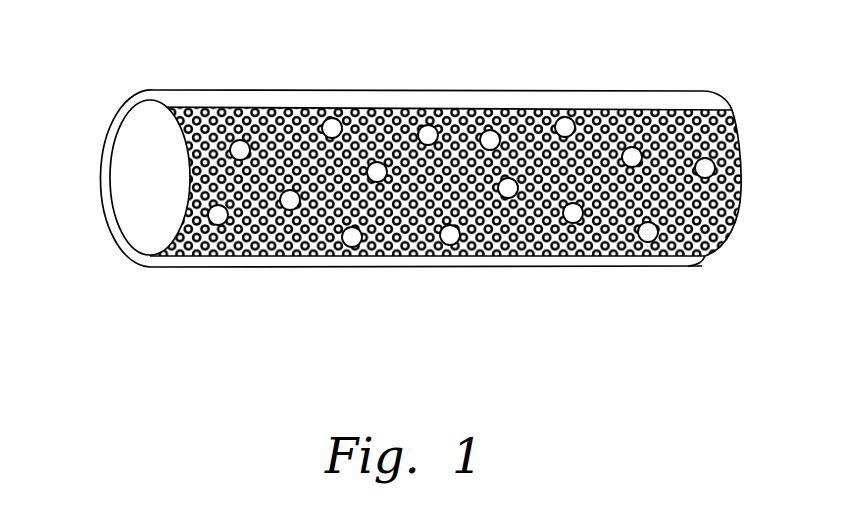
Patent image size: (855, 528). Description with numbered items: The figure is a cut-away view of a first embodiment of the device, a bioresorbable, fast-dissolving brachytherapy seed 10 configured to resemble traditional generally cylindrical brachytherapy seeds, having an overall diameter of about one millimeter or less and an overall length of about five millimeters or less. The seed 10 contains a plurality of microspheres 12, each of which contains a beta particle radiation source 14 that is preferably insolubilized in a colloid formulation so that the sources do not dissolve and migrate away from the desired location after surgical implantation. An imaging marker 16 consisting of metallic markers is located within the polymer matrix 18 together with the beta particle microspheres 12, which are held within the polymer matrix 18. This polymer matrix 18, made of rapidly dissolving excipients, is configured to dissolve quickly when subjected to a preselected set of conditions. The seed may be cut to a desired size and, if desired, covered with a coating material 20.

The brachytherapy seed 10 is at (152, 178).
The microspheres 12 is at (478, 197).
The beta particle radiation source 14 is at (592, 243).
The imaging marker 16 is at (219, 222).
The polymer matrix 18 is at (727, 153).
The coating material 20 is at (355, 100).